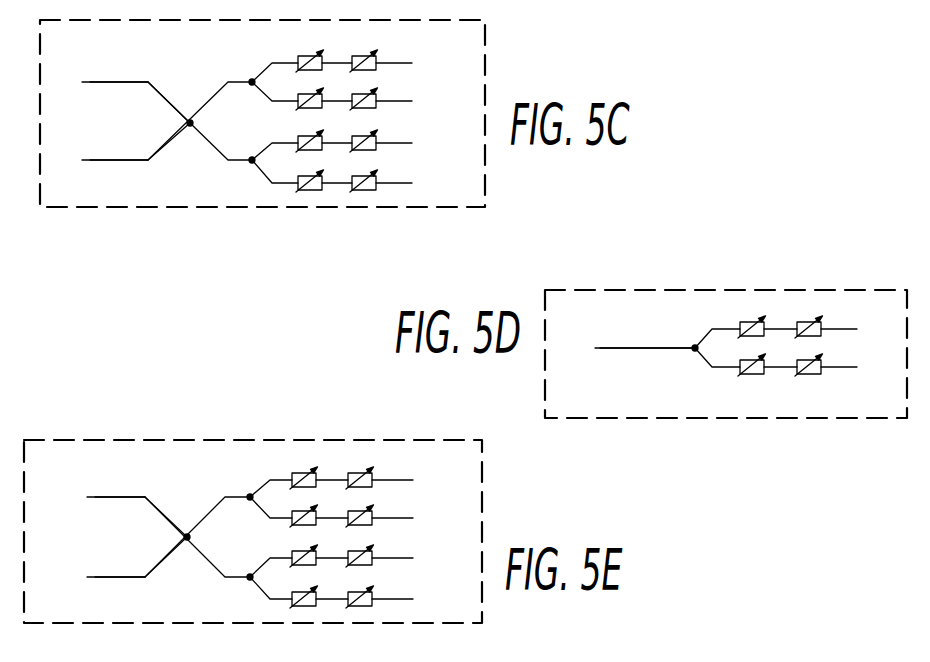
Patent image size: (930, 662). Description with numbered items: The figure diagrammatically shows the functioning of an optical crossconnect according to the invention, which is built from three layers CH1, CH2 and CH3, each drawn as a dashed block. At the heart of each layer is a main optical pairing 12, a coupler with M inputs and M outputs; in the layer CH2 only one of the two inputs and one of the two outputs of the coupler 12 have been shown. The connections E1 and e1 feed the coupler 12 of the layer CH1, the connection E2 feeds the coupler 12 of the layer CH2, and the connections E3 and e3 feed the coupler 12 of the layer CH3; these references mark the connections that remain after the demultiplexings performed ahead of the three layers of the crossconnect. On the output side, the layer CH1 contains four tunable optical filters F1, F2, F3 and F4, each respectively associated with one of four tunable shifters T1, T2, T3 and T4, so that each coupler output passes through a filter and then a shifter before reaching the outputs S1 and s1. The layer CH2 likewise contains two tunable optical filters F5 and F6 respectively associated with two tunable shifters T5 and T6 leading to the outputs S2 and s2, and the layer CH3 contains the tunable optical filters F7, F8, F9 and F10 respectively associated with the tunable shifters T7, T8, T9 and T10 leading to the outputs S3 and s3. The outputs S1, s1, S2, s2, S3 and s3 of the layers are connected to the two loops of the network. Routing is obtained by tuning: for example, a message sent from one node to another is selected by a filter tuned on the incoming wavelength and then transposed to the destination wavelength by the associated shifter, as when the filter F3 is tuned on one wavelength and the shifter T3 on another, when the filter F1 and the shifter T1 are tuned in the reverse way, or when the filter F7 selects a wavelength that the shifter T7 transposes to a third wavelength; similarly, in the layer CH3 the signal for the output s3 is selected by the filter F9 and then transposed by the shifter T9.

In FIG. 5C, the main optical pairing 12 is at (194, 150).
In FIG. 5D, the main optical pairing 12 is at (686, 364).
In FIG. 5E, the main optical pairing 12 is at (188, 552).
In FIG. 5C, the layer CH1 is at (92, 208).
In FIG. 5D, the layer CH2 is at (703, 290).
In FIG. 5E, the layer CH3 is at (273, 440).
In FIG. 5C, the connection E1 is at (120, 97).
In FIG. 5C, the connection e1 is at (120, 146).
In FIG. 5D, the connection E2 is at (626, 347).
In FIG. 5E, the connection E3 is at (117, 511).
In FIG. 5E, the connection e3 is at (117, 562).
In FIG. 5C, the tunable optical filter F1 is at (288, 60).
In FIG. 5C, the tunable optical filter F2 is at (288, 93).
In FIG. 5C, the tunable optical filter F3 is at (288, 139).
In FIG. 5C, the tunable optical filter F4 is at (288, 175).
In FIG. 5D, the tunable optical filter F5 is at (746, 320).
In FIG. 5D, the tunable optical filter F6 is at (744, 359).
In FIG. 5E, the tunable optical filter F7 is at (284, 476).
In FIG. 5E, the tunable optical filter F8 is at (284, 510).
In FIG. 5E, the tunable optical filter F9 is at (284, 555).
In FIG. 5E, the tunable optical filter F10 is at (284, 591).
In FIG. 5C, the tunable shifter T1 is at (350, 55).
In FIG. 5C, the tunable shifter T2 is at (350, 93).
In FIG. 5C, the tunable shifter T3 is at (350, 135).
In FIG. 5C, the tunable shifter T4 is at (350, 175).
In FIG. 5D, the tunable shifter T5 is at (793, 320).
In FIG. 5D, the tunable shifter T6 is at (793, 359).
In FIG. 5E, the tunable shifter T7 is at (345, 472).
In FIG. 5E, the tunable shifter T8 is at (345, 510).
In FIG. 5E, the tunable shifter T9 is at (345, 550).
In FIG. 5E, the tunable shifter T10 is at (345, 591).
In FIG. 5C, the output S1 is at (412, 82).
In FIG. 5C, the output s1 is at (411, 163).
In FIG. 5D, the output S2 is at (853, 329).
In FIG. 5D, the output s2 is at (852, 367).
In FIG. 5E, the output S3 is at (410, 499).
In FIG. 5E, the output s3 is at (409, 579).